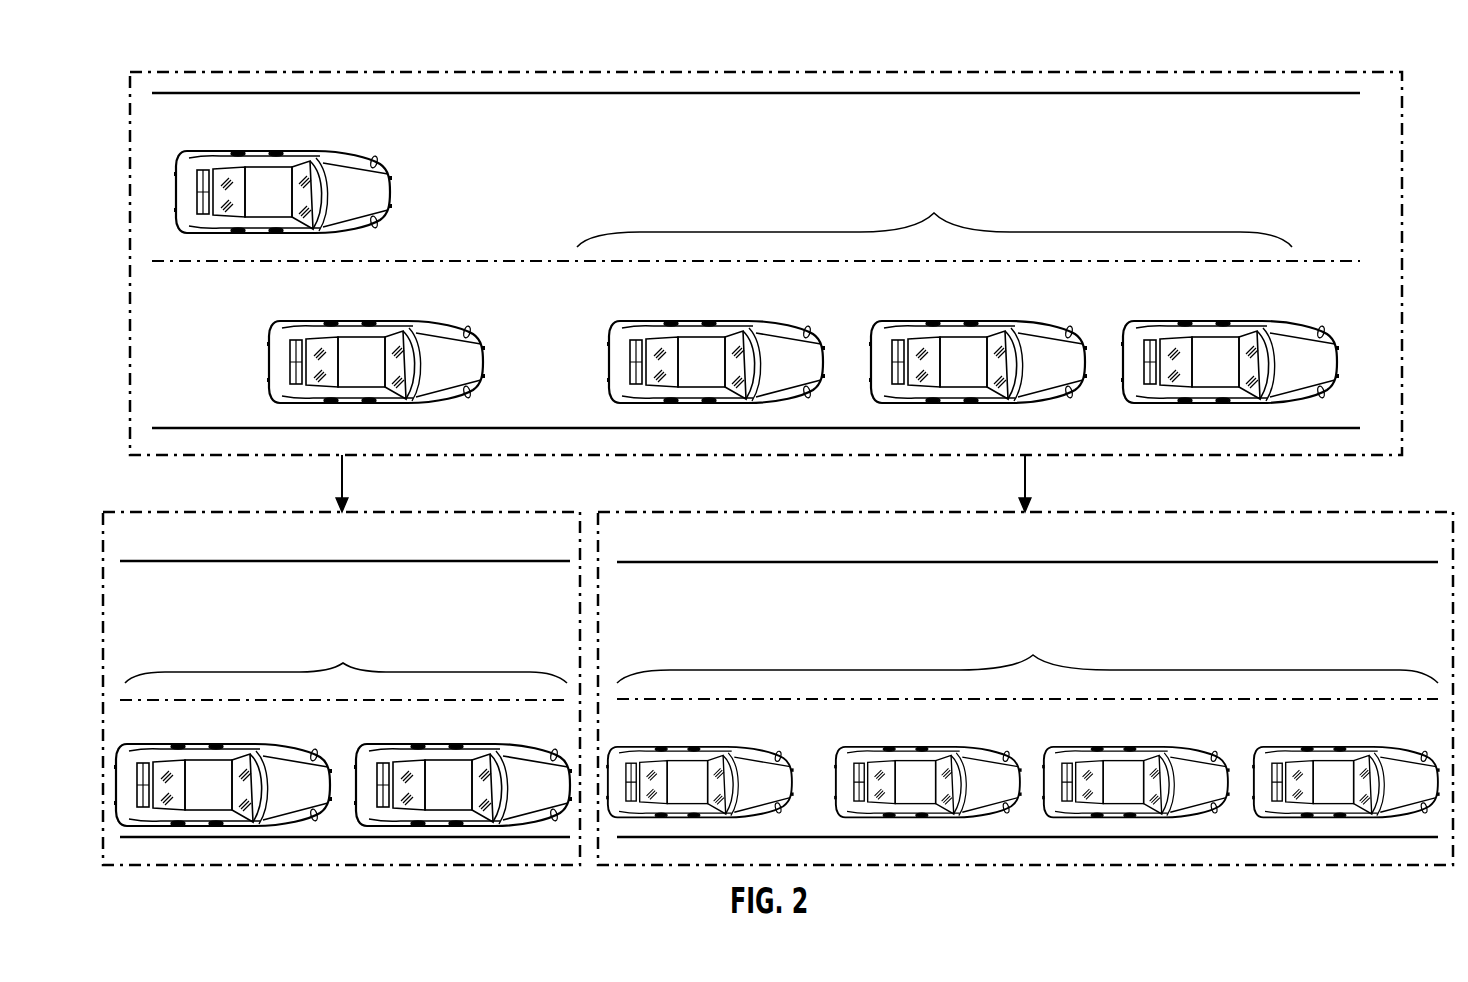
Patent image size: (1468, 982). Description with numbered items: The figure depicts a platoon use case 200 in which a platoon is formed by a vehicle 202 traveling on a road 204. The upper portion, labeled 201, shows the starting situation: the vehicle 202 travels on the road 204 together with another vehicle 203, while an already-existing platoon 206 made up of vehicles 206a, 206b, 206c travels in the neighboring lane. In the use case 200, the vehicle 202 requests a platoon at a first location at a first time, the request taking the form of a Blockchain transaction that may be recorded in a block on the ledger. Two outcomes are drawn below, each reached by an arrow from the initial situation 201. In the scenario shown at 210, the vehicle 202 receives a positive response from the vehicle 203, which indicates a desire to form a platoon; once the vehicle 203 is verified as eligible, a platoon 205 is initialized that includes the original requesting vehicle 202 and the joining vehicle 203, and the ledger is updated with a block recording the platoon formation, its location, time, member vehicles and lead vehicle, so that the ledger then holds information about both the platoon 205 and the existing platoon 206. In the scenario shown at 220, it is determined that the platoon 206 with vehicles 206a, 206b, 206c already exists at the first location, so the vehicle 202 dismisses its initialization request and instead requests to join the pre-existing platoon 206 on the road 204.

The platoon use case 200 is at (166, 46).
The initial scenario 201 is at (258, 72).
The vehicle 202 is at (262, 157).
The vehicle 203 is at (328, 323).
The road 204 is at (532, 95).
The platoon 205 is at (346, 655).
The already-existing platoon 206 is at (1007, 430).
The vehicle 206a is at (920, 748).
The vehicle 206b is at (1115, 748).
The vehicle 206c is at (1298, 748).
The platoon initialization scenario 210 is at (173, 512).
The platoon joining scenario 220 is at (668, 512).